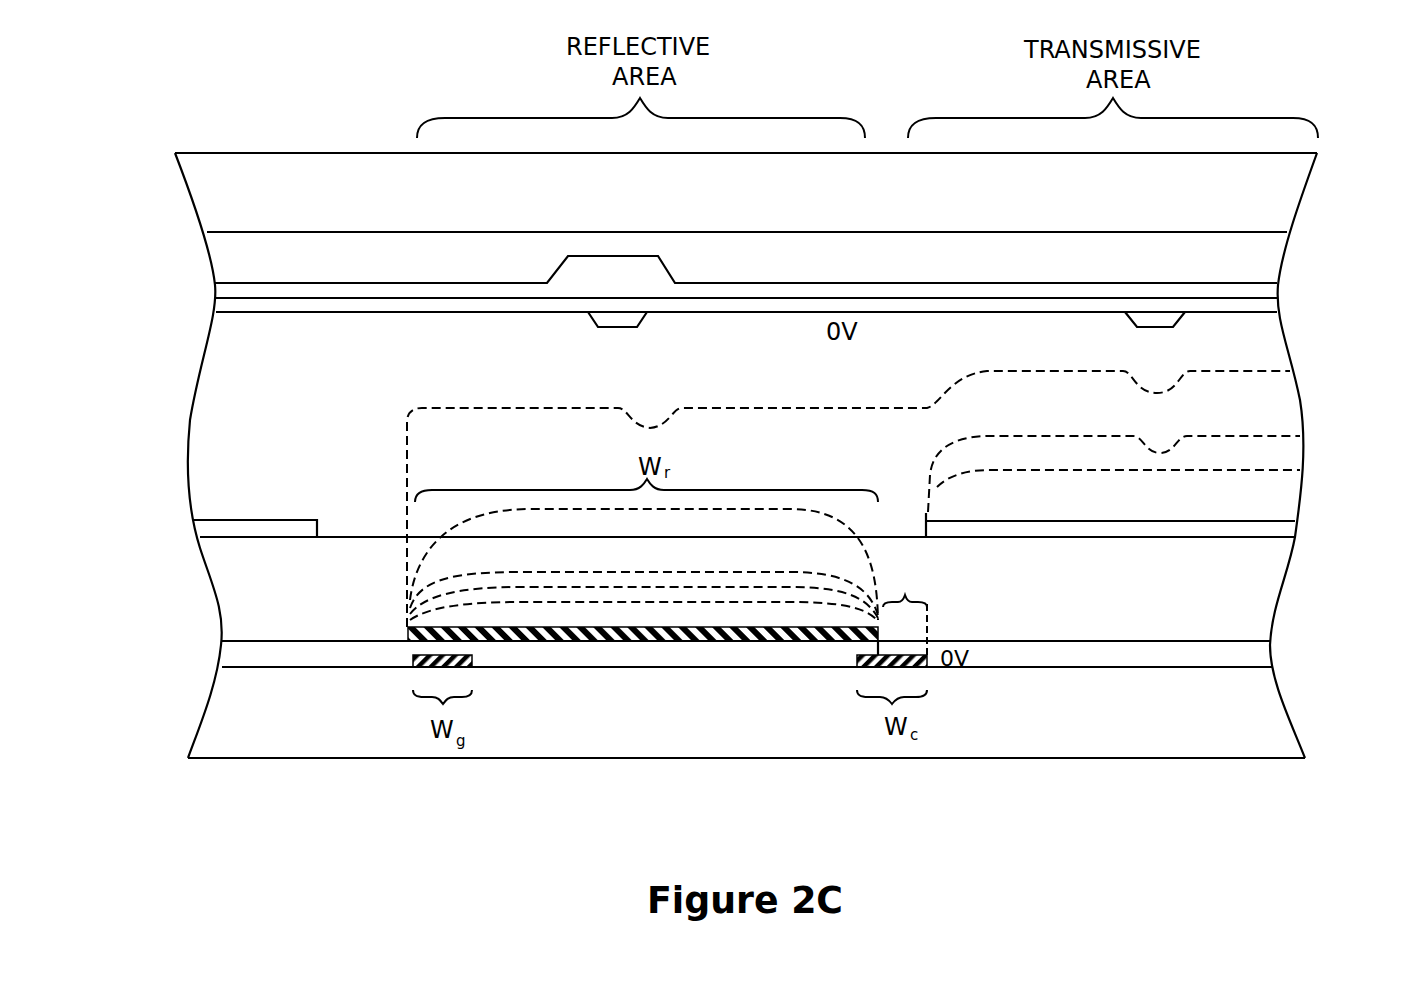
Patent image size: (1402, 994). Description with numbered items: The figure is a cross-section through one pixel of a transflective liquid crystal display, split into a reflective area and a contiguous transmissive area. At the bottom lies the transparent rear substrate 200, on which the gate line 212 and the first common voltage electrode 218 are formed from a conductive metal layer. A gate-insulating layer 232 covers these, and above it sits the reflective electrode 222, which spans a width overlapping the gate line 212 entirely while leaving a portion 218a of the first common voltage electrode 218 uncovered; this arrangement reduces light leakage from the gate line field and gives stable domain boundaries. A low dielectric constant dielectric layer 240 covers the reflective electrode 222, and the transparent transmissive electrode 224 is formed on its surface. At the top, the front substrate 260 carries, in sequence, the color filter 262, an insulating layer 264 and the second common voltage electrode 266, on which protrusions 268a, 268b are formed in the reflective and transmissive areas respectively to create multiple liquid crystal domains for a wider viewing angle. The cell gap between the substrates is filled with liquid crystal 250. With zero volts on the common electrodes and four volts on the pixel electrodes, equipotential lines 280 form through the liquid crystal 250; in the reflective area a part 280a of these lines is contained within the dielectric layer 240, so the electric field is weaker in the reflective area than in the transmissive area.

The front substrate 260 is at (210, 192).
The color filter 262 is at (215, 248).
The insulating layer 264 is at (215, 288).
The second common voltage electrode 266 is at (215, 305).
The protrusion 268a is at (618, 327).
The protrusion 268b is at (1157, 327).
The liquid crystal 250 is at (210, 434).
The equipotential lines 280 is at (406, 414).
The part of the equipotential lines 280a is at (432, 585).
The transmissive electrode 224 is at (1295, 530).
The dielectric layer 240 is at (222, 583).
The gate-insulating layer 232 is at (222, 657).
The rear substrate 200 is at (220, 703).
The reflective electrode 222 is at (582, 641).
The gate line 212 is at (408, 657).
The first common voltage electrode 218 is at (857, 655).
The portion of the first common voltage electrode 218a is at (918, 610).